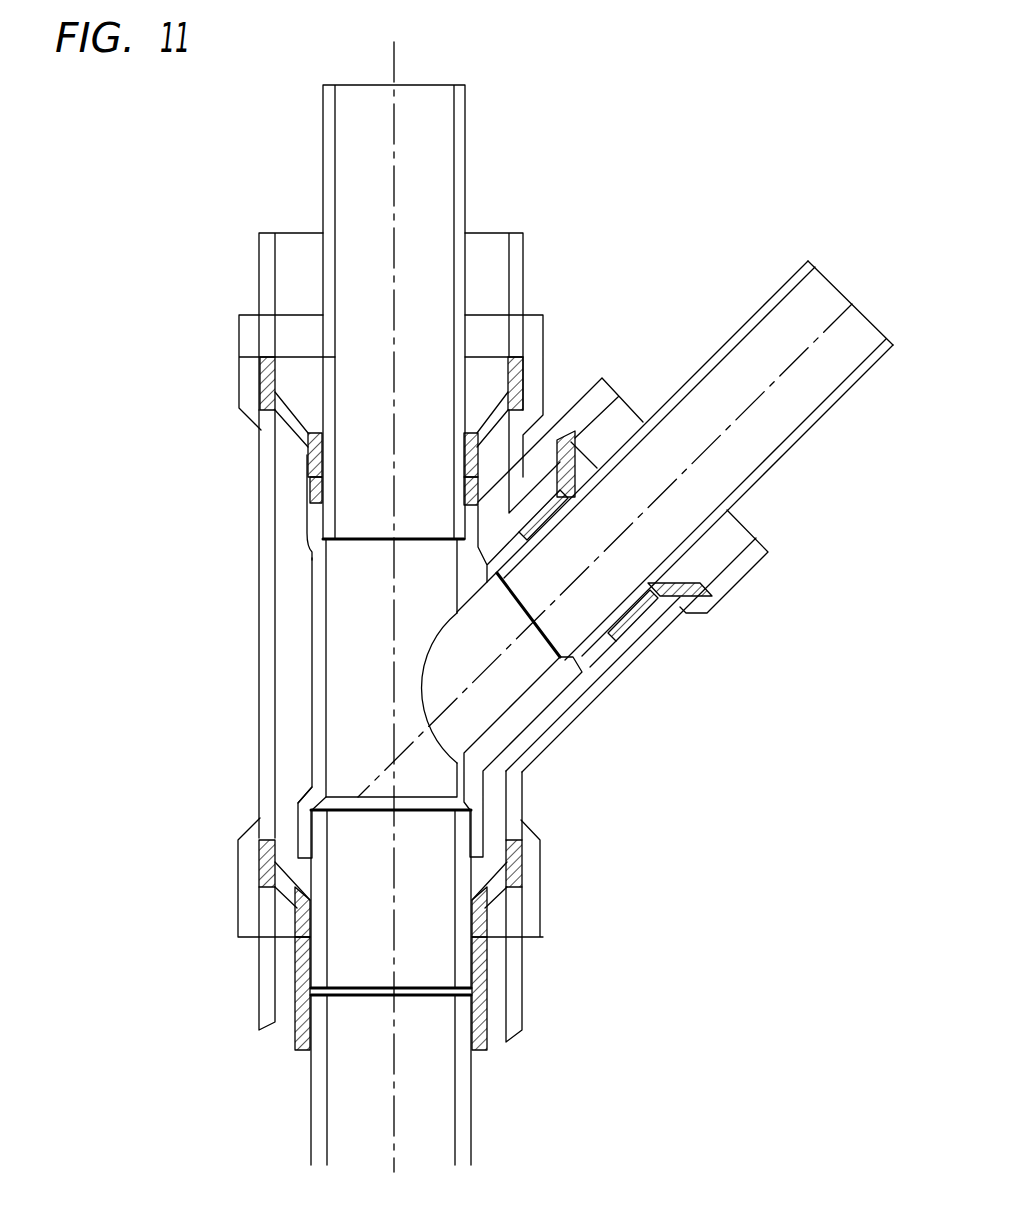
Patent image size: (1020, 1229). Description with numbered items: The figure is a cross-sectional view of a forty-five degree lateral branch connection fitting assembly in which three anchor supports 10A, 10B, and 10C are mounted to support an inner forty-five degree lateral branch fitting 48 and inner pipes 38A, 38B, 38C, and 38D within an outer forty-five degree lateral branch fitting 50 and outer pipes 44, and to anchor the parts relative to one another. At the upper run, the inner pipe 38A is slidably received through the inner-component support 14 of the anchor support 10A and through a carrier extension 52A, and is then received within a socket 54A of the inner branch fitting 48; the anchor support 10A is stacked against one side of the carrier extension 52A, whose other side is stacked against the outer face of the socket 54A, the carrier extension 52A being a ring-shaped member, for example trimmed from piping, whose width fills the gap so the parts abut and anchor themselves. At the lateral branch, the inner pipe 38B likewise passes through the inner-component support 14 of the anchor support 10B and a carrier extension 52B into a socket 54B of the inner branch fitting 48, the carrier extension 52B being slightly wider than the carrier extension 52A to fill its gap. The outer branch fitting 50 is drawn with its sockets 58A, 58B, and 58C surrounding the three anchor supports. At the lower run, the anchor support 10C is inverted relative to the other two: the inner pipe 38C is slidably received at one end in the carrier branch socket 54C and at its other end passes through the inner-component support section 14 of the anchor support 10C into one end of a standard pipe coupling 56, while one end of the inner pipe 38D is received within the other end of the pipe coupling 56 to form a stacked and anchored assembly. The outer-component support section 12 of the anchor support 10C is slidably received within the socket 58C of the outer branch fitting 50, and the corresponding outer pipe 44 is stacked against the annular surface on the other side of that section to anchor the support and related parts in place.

The inner pipe 38A is at (470, 146).
The inner pipe 38B is at (778, 292).
The inner pipe 38C is at (327, 931).
The inner pipe 38D is at (308, 1114).
The outer pipe 44 is at (525, 266).
The flange of first socket 58A is at (250, 357).
The flange of branch socket 58B is at (742, 585).
The socket of the outer branch fitting 58C is at (238, 937).
The anchor support 10A is at (286, 433).
The anchor support 10B is at (662, 605).
The anchor support 10C is at (521, 910).
The inner-component support 14 is at (307, 462).
The carrier extension 52A is at (306, 490).
The carrier extension 52B is at (637, 647).
The socket of the inner branch fitting 54A is at (312, 537).
The socket of the inner branch fitting 54B is at (612, 673).
The carrier branch socket 54C is at (293, 822).
The inner lateral branch fitting 48 is at (309, 666).
The outer lateral branch fitting 50 is at (249, 741).
The outer-component support section 12 is at (527, 862).
The pipe coupling 56 is at (492, 992).